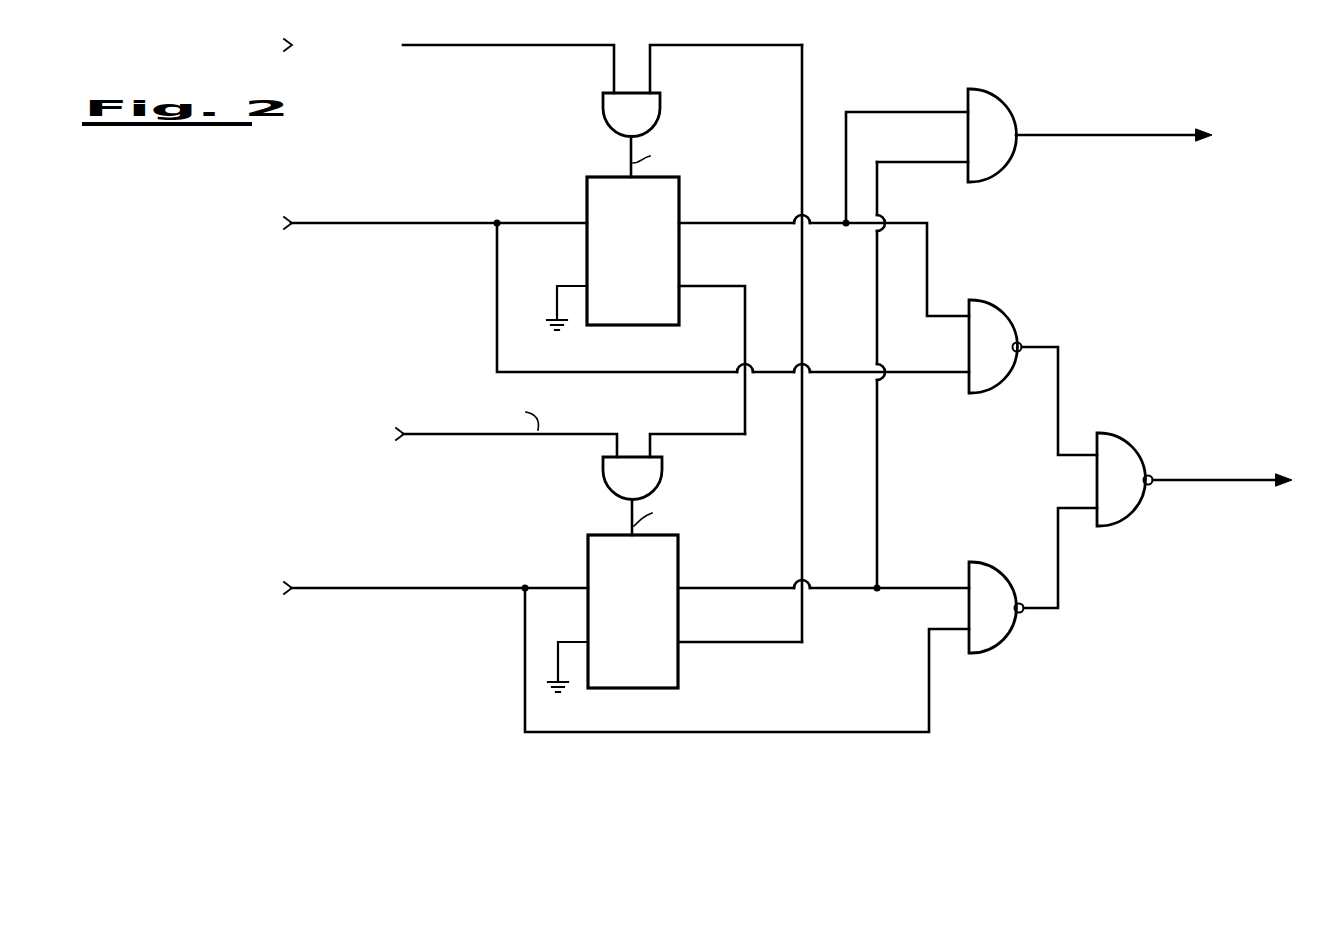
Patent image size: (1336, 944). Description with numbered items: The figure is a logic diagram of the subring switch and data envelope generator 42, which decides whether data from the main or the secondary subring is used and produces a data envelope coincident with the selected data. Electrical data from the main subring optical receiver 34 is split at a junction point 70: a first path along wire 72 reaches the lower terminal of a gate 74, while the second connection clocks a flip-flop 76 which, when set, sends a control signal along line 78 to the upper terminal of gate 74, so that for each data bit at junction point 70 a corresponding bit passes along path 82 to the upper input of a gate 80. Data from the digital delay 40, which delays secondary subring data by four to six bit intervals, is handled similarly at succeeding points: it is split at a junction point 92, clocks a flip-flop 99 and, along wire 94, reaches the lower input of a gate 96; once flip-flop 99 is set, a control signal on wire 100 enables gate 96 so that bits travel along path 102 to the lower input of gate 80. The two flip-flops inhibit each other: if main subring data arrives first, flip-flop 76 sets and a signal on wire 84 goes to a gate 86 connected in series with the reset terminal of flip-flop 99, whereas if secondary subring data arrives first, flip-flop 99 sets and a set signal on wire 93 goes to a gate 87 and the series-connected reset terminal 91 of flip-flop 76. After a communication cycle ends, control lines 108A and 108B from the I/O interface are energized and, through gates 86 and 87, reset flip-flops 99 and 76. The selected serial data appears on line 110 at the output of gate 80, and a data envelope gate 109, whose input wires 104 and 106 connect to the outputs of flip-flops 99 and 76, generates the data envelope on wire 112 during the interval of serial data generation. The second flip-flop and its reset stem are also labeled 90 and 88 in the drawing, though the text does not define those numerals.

The subring switch and data envelope generator 42 is at (849, 77).
The control line 108B is at (510, 47).
The gate 87 is at (662, 112).
The reset terminal 91 is at (629, 160).
The flip-flop 76 is at (681, 262).
The junction point 70 is at (435, 225).
The main subring optical receiver 34 is at (423, 207).
The wire 72 is at (495, 316).
The wire 84 is at (747, 318).
The wire 93 is at (804, 448).
The flip-flop 99 is at (681, 634).
The line 78 is at (929, 286).
The input wire 106 is at (920, 108).
The input wire 104 is at (879, 508).
The data envelope gate 109 is at (992, 97).
The wire 112 is at (1114, 142).
The gate 74 is at (1000, 316).
The path 82 is at (1060, 396).
The gate 80 is at (1122, 515).
The line 110 is at (1253, 484).
The path 102 is at (1060, 607).
The gate 96 is at (999, 627).
The wire 100 is at (706, 586).
The wire 94 is at (760, 730).
The junction point 92 is at (392, 570).
The digital delay 40 is at (334, 568).
The second flip-flop 90 is at (570, 594).
The control line 108A is at (512, 440).
The gate 86 is at (664, 480).
The reset input of second flip-flop 88 is at (630, 516).